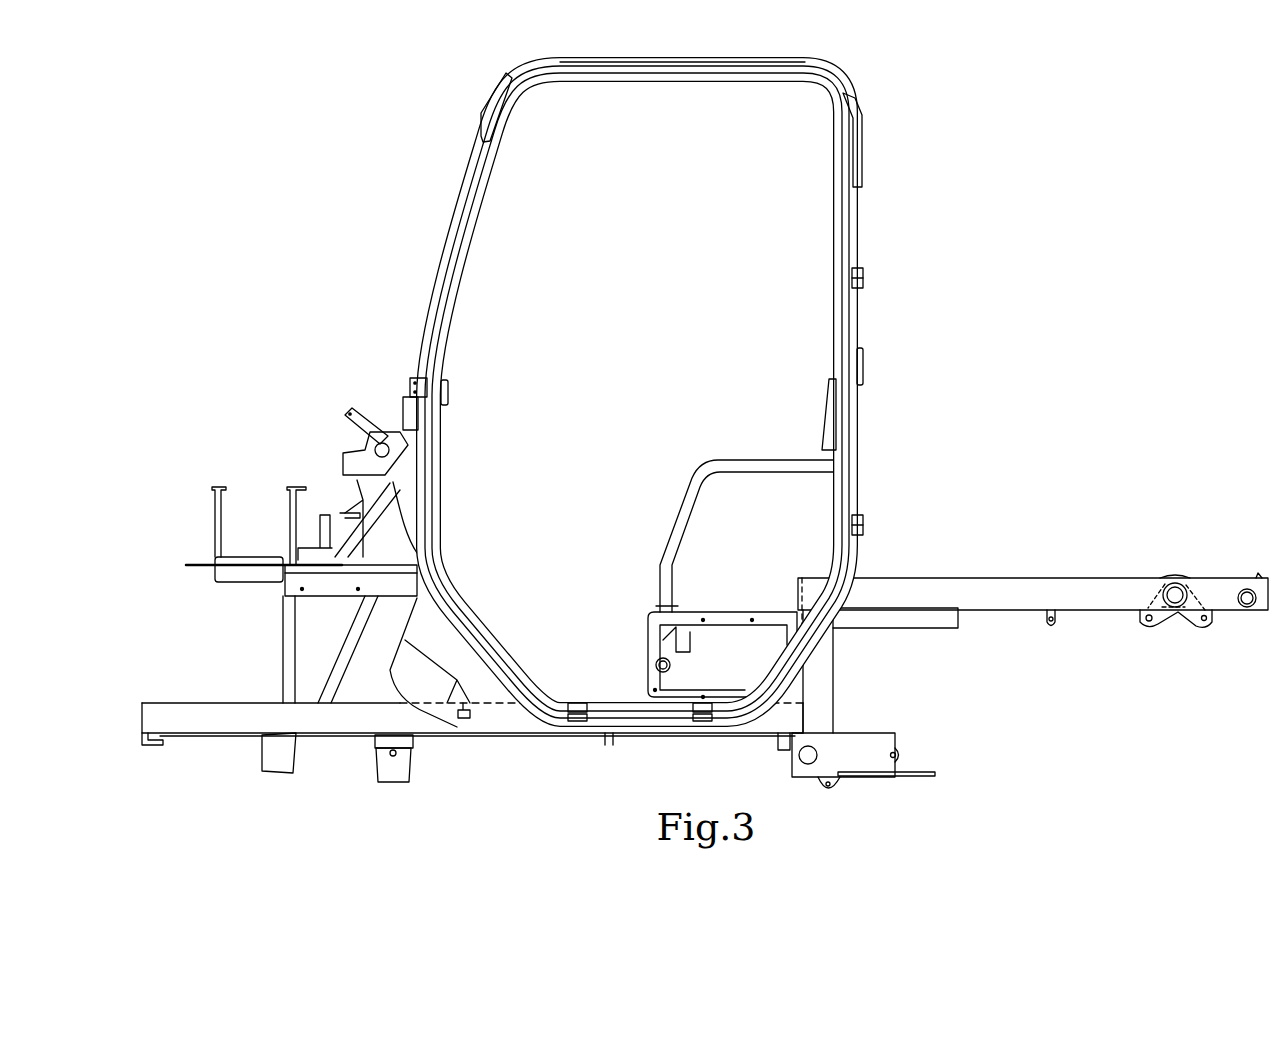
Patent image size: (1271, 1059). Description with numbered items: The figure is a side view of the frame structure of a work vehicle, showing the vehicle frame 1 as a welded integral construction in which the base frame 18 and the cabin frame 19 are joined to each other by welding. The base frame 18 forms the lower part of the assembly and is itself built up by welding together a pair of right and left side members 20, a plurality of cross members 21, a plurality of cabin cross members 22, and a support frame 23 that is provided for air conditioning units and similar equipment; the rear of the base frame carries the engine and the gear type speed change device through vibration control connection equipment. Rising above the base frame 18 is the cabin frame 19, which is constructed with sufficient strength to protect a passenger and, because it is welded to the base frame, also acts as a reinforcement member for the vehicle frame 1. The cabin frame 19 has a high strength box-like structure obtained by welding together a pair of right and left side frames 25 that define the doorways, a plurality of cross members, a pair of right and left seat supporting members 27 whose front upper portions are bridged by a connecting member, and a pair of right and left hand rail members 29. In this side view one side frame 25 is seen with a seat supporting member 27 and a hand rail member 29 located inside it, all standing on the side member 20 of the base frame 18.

The vehicle frame 1 is at (1008, 154).
The base frame 18 is at (487, 736).
The cabin frame 19 is at (443, 241).
The side member 20 is at (1080, 578).
The cross member 21 is at (152, 750).
The cabin cross member 22 is at (557, 720).
The support frame 23 is at (250, 557).
The side frame 25 is at (663, 83).
The seat supporting member 27 is at (722, 612).
The hand rail member 29 is at (707, 462).